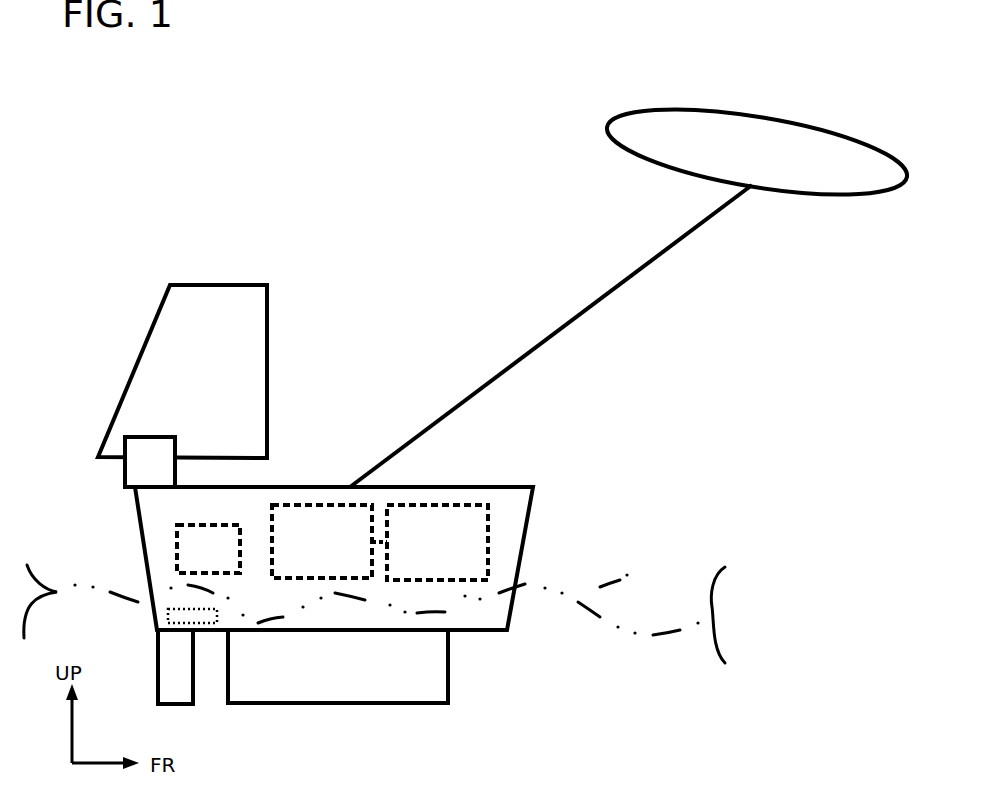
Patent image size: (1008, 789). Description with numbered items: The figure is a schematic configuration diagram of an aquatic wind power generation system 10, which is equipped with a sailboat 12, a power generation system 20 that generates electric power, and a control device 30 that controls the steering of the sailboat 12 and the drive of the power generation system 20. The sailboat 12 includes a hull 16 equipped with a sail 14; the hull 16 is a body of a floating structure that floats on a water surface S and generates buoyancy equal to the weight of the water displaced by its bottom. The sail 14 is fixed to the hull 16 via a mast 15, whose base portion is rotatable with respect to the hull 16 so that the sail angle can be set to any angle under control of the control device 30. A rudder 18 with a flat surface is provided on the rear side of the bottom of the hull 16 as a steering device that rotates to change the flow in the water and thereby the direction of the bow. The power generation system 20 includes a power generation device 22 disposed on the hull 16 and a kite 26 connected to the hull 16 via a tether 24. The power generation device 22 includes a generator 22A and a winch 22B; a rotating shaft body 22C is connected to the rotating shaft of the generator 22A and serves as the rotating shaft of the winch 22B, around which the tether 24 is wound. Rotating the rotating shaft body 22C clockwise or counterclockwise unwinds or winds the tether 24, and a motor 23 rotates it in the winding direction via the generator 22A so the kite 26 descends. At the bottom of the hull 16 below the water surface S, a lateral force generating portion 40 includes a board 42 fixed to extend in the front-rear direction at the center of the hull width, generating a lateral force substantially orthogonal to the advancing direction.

The aquatic wind power generation system 10 is at (830, 64).
The sailboat 12 is at (640, 467).
The sail 14 is at (240, 323).
The mast 15 is at (135, 454).
The hull 16 is at (517, 507).
The rudder 18 is at (183, 693).
The power generation system 20 is at (662, 322).
The power generation device 22 is at (380, 542).
The generator 22A is at (437, 500).
The winch 22B is at (290, 500).
The rotating shaft body 22C is at (377, 540).
The motor 23 is at (170, 612).
The tether 24 is at (604, 294).
The kite 26 is at (697, 126).
The control device 30 is at (177, 548).
The lateral force generating portion 40 is at (472, 713).
The board 42 is at (448, 672).
The water surface S is at (638, 568).